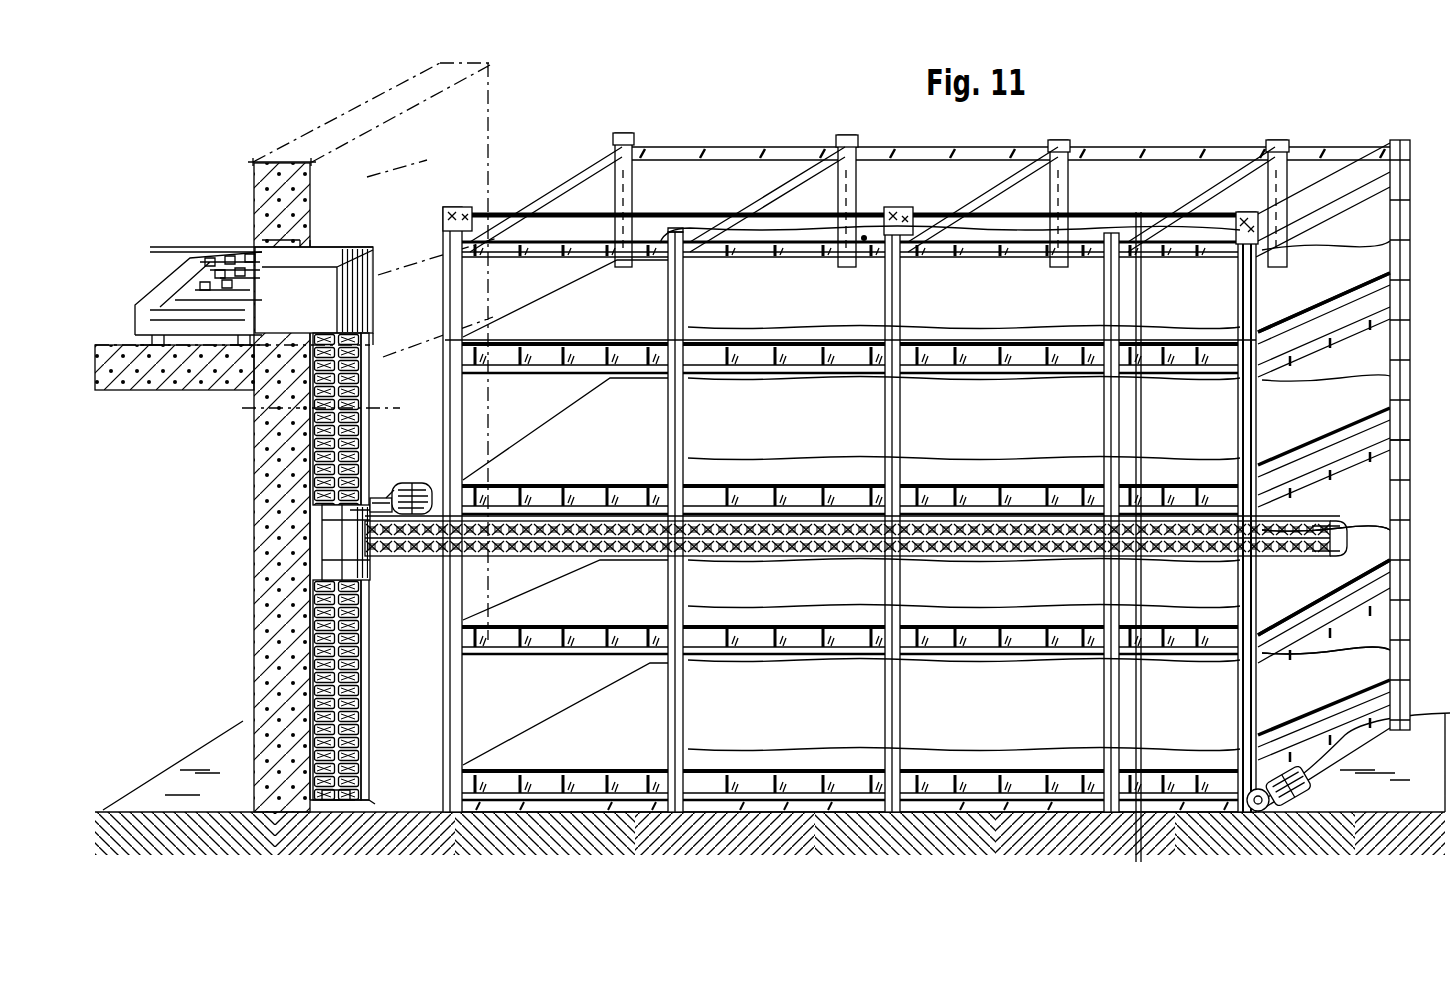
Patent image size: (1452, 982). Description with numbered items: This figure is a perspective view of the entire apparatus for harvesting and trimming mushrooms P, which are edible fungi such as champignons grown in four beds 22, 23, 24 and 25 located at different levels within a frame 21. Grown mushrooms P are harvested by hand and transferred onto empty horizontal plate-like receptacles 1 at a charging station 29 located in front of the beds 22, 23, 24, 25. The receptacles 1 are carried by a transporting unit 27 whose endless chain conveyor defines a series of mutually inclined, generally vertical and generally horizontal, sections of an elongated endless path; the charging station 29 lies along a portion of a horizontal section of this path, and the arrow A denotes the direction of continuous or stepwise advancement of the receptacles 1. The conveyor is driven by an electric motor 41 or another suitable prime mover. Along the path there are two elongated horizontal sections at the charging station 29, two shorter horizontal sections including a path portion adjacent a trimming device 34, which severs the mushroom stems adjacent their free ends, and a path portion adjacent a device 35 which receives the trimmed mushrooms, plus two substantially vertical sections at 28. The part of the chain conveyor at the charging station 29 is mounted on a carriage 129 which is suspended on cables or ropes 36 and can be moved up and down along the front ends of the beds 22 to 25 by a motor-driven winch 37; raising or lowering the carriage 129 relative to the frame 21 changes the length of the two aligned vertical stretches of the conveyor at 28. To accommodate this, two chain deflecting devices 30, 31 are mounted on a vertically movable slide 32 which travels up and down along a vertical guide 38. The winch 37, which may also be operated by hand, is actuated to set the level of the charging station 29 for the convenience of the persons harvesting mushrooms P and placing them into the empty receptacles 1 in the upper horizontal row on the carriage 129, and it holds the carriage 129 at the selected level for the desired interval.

The plate-like receptacle 1 is at (1367, 583).
The frame 21 is at (793, 140).
The bed 22 is at (1070, 273).
The bed 23 is at (1377, 400).
The bed 24 is at (1360, 570).
The bed 25 is at (1358, 667).
The transporting unit 27 is at (380, 368).
The vertical sections of the endless path 28 is at (375, 697).
The charging station 29 is at (971, 567).
The chain deflecting device 30 is at (416, 486).
The chain deflecting device 31 is at (368, 568).
The slide 32 is at (378, 480).
The trimming device 34 is at (275, 240).
The receiving device 35 is at (163, 262).
The cables or ropes 36 is at (1130, 213).
The motor-driven winch 37 is at (1303, 800).
The vertical guide 38 is at (370, 744).
The electric motor 41 is at (422, 478).
The carriage 129 is at (1396, 470).
The fungi (mushrooms) P is at (866, 236).
The arrow A is at (1285, 513).